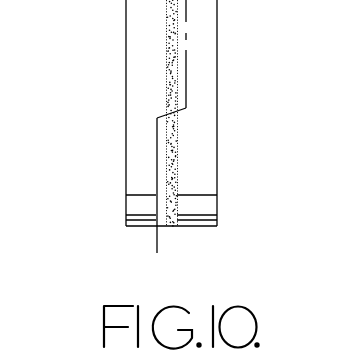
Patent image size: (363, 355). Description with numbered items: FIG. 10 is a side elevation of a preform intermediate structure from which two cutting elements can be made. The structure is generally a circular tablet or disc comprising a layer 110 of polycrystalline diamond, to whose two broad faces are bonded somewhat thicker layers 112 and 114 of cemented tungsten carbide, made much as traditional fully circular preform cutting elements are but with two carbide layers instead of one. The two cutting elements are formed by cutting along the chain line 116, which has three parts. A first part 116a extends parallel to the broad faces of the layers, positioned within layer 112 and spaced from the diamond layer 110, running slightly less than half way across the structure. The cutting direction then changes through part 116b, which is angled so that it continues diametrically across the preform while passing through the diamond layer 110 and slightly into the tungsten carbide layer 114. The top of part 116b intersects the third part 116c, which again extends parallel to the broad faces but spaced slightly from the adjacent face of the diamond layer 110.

The layer of polycrystalline diamond 110 is at (166, 17).
The layer of cemented tungsten carbide 112 is at (143, 53).
The layer of cemented tungsten carbide 114 is at (203, 58).
The cutting line 116 is at (156, 150).
The first part of cutting line 116a is at (156, 177).
The second part of cutting line 116b is at (170, 117).
The third part of cutting line 116c is at (186, 19).